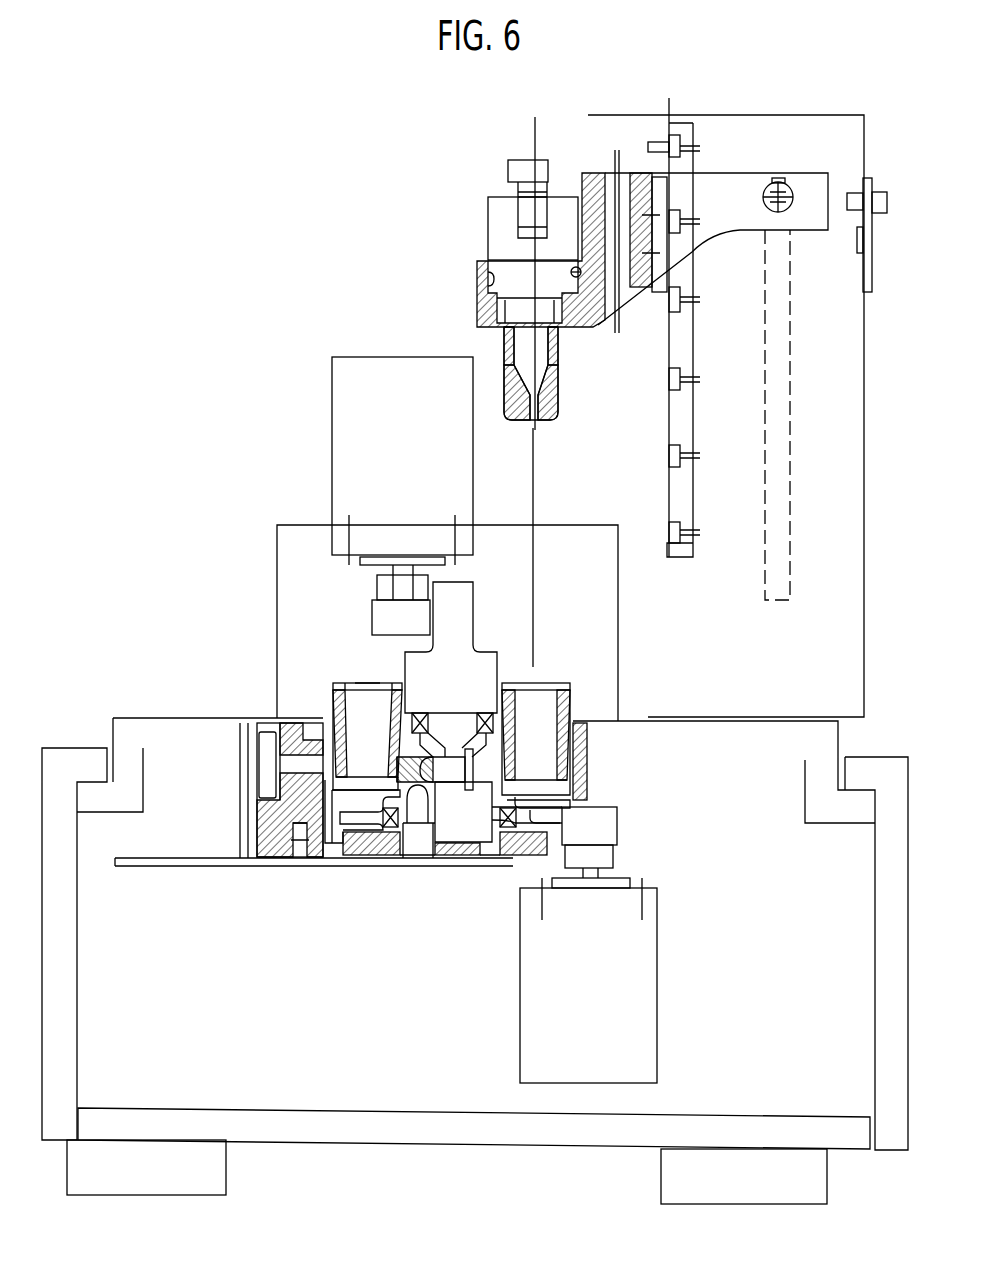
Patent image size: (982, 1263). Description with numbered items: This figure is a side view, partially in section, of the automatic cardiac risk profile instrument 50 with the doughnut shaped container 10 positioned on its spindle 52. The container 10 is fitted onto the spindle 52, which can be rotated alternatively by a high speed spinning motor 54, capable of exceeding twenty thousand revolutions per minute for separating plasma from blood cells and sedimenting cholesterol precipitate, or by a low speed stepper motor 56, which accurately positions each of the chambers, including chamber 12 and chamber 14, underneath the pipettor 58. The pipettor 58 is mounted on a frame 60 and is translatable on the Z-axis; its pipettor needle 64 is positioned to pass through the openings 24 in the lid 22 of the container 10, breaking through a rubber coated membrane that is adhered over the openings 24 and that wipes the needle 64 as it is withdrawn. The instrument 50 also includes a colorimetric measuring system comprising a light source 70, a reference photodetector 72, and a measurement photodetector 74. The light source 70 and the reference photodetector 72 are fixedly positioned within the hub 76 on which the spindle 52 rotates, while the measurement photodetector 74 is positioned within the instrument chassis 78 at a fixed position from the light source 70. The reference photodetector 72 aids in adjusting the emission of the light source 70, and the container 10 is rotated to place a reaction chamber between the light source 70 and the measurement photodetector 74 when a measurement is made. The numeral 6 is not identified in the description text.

The support rod 6 is at (777, 450).
The doughnut shaped container 10 is at (413, 714).
The chamber 12 is at (380, 735).
The chamber 14 is at (548, 735).
The lid 22 is at (340, 684).
The openings 24 is at (372, 683).
The instrument 50 is at (340, 245).
The spindle 52 is at (421, 674).
The high speed spinning motor 54 is at (338, 410).
The low speed stepper motor 56 is at (658, 942).
The pipettor 58 is at (472, 282).
The frame 60 is at (813, 122).
The pipettor needle 64 is at (533, 615).
The light source 70 is at (447, 765).
The reference photodetector 72 is at (418, 835).
The measurement photodetector 74 is at (263, 753).
The hub 76 is at (476, 824).
The instrument chassis 78 is at (262, 832).